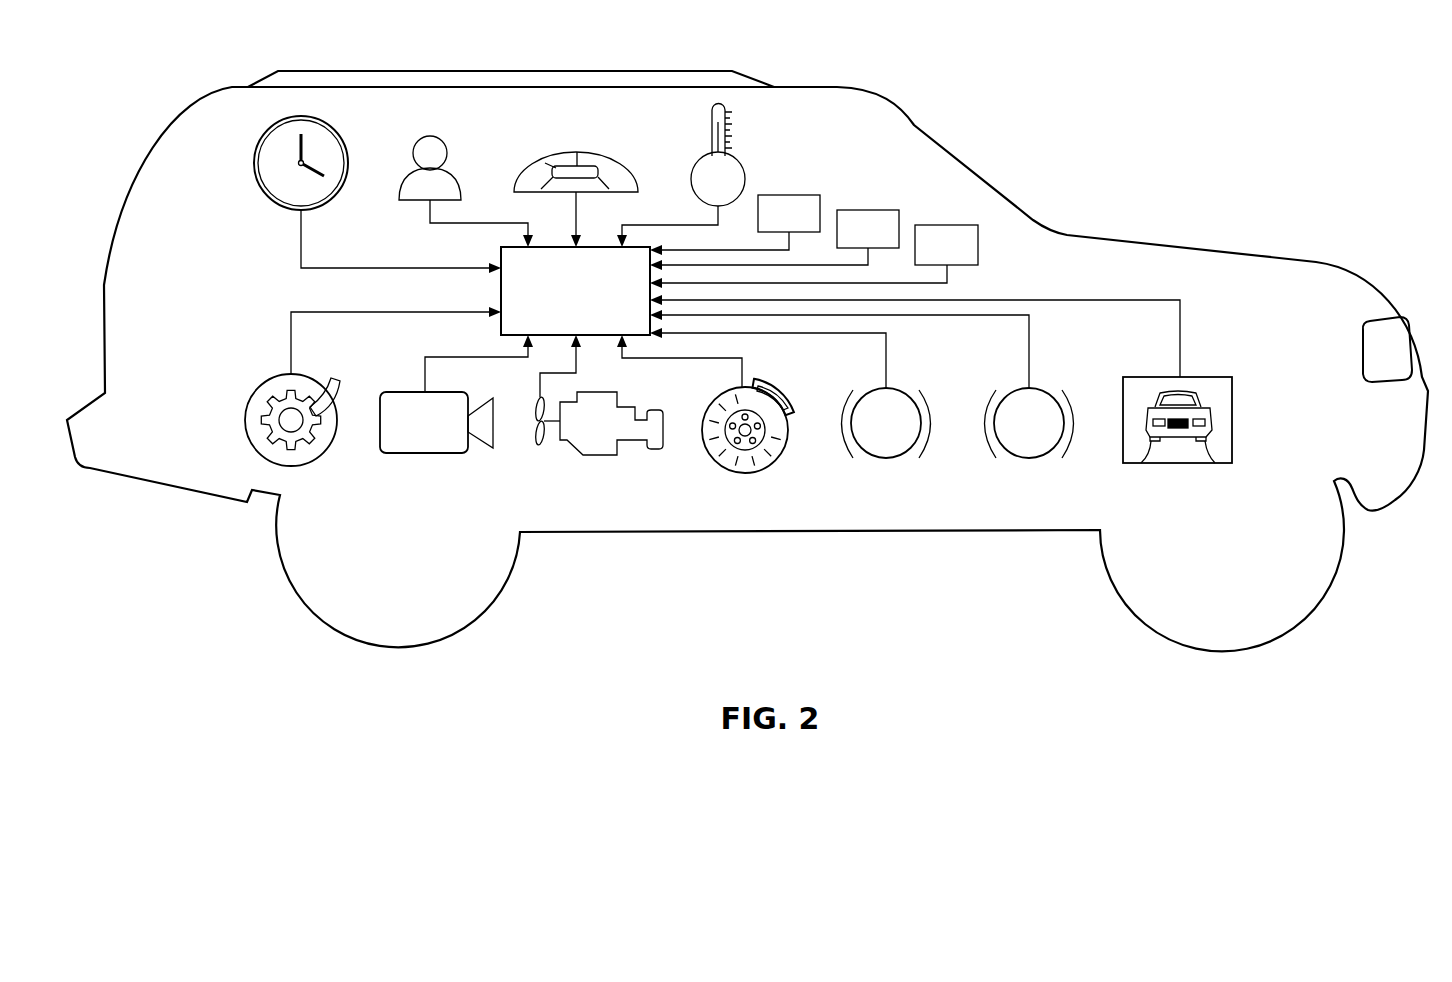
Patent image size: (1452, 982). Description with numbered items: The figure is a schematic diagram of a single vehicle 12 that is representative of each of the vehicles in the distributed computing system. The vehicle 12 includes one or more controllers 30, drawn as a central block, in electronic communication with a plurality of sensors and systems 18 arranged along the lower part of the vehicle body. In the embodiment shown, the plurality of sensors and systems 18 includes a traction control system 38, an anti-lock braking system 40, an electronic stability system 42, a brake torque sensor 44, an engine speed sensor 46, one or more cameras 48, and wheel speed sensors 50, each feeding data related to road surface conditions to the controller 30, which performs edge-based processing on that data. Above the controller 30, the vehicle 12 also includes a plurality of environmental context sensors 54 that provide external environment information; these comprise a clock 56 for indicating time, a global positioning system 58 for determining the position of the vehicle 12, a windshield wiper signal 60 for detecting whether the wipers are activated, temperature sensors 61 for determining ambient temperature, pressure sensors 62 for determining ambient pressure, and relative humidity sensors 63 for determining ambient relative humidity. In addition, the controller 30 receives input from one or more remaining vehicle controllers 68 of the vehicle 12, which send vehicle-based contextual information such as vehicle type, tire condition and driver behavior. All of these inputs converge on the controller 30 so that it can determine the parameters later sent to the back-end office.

The vehicle 12 is at (930, 130).
The plurality of sensors and systems 18 is at (808, 530).
The controller 30 is at (561, 303).
The traction control system 38 is at (1184, 465).
The anti-lock braking system 40 is at (1029, 458).
The electronic stability system 42 is at (885, 458).
The brake torque sensor 44 is at (731, 472).
The engine speed sensor 46 is at (600, 455).
The camera 48 is at (425, 453).
The wheel speed sensor 50 is at (313, 462).
The plurality of environmental context sensors 54 is at (212, 116).
The clock 56 is at (270, 202).
The global positioning system 58 is at (447, 140).
The windshield wiper signal 60 is at (598, 155).
The temperature sensor 61 is at (745, 181).
The pressure sensor 62 is at (777, 226).
The relative humidity sensor 63 is at (856, 241).
The remaining vehicle controller 68 is at (935, 258).